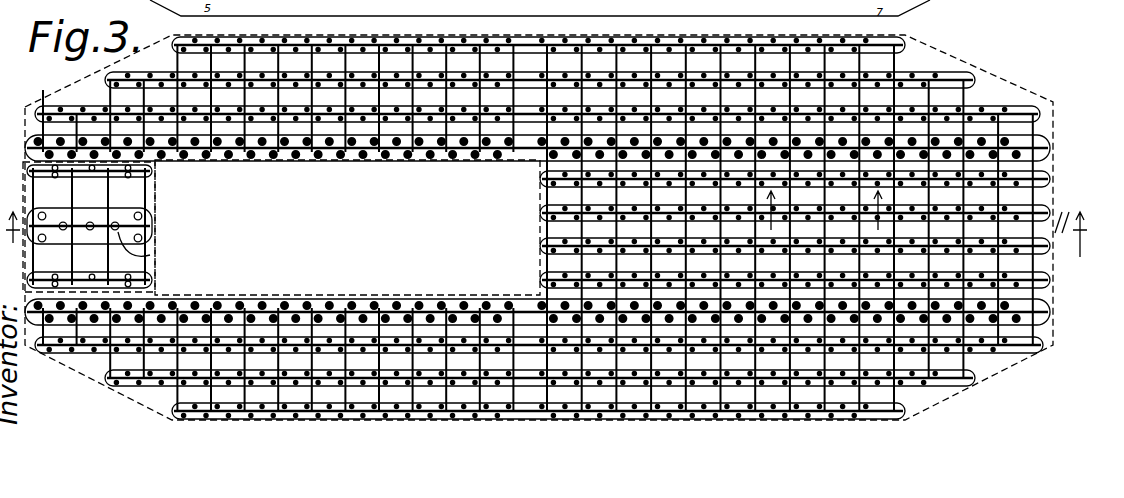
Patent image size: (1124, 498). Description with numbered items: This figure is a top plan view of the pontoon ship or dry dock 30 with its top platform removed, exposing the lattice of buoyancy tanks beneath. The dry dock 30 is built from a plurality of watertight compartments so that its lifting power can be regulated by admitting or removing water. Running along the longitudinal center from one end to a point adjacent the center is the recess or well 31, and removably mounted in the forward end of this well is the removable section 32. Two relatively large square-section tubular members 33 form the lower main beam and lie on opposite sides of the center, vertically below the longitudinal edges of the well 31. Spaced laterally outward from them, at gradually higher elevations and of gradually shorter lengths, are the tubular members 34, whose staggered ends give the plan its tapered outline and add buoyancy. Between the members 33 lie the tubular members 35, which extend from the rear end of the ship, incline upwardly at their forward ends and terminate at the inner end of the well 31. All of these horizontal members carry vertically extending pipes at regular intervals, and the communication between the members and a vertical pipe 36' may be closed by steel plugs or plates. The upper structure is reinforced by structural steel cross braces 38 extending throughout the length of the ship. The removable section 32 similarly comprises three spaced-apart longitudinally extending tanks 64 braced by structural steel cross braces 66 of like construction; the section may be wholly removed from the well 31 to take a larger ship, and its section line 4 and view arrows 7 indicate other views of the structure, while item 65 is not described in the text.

The pontoon ship or dry dock 30 is at (1010, 80).
The recess or well 31 is at (426, 160).
The removable section 32 is at (167, 205).
The longitudinally extending tubular members 33 is at (268, 160).
The longitudinally extending tubular members 34 is at (985, 103).
The longitudinally extending tubular members 35 is at (1052, 187).
The vertical pipe 36' is at (710, 201).
The structural steel cross braces 38 is at (108, 90).
The longitudinally extending tanks 64 is at (151, 229).
The panel connector 65 is at (150, 255).
The structural steel cross braces 66 is at (151, 265).
The section line 4- 4 is at (554, 240).
The view arrows 7 is at (819, 217).